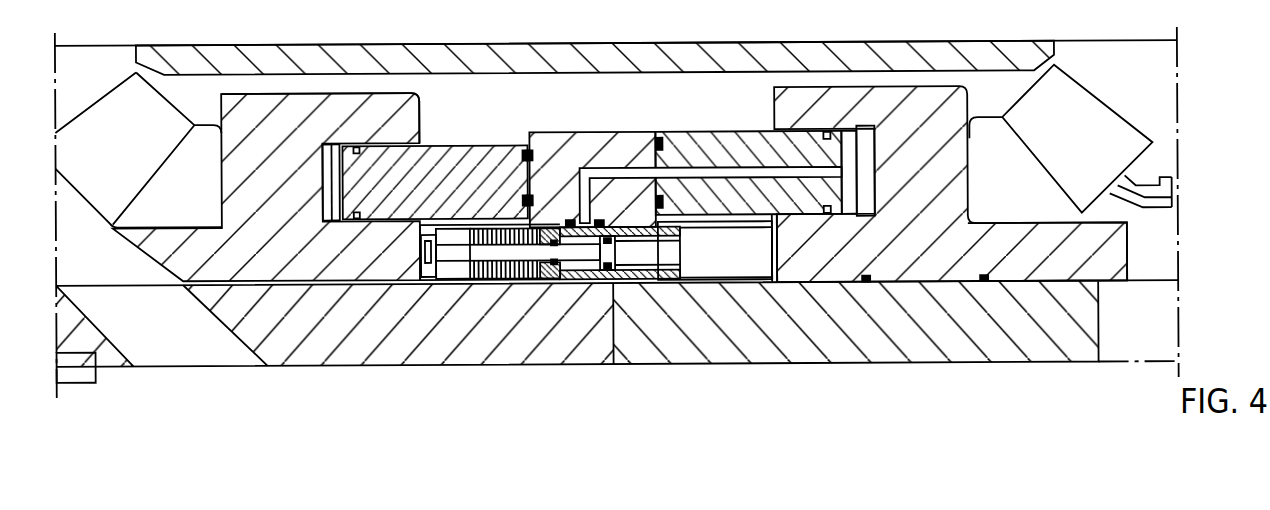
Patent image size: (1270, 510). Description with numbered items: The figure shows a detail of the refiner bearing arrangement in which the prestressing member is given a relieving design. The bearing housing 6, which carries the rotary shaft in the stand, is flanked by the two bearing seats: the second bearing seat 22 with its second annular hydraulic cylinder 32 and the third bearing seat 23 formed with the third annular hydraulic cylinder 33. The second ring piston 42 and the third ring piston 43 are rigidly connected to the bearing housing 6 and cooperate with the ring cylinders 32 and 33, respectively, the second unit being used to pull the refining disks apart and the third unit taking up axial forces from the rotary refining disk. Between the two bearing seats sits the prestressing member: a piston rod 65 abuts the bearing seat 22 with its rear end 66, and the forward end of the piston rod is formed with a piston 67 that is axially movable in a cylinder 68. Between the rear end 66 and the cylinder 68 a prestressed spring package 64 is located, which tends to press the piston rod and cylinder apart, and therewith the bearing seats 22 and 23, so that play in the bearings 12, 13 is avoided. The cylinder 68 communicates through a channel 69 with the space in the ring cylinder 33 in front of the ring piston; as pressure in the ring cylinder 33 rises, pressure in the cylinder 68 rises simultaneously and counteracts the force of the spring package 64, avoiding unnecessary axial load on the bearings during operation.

The bearing housing 6 is at (318, 352).
The bearing 12 is at (202, 140).
The bearing 13 is at (1006, 146).
The second bearing seat 22 is at (170, 262).
The third bearing seat 23 is at (1103, 258).
The second annular hydraulic cylinder 32 is at (402, 113).
The third annular hydraulic cylinder 33 is at (795, 108).
The second ring piston 42 is at (492, 158).
The third ring piston 43 is at (700, 142).
The prestressed spring package 64 is at (527, 265).
The piston rod 65 is at (492, 250).
The rear end 66 is at (443, 272).
The piston 67 is at (648, 262).
The cylinder 68 is at (603, 283).
The channel 69 is at (630, 170).